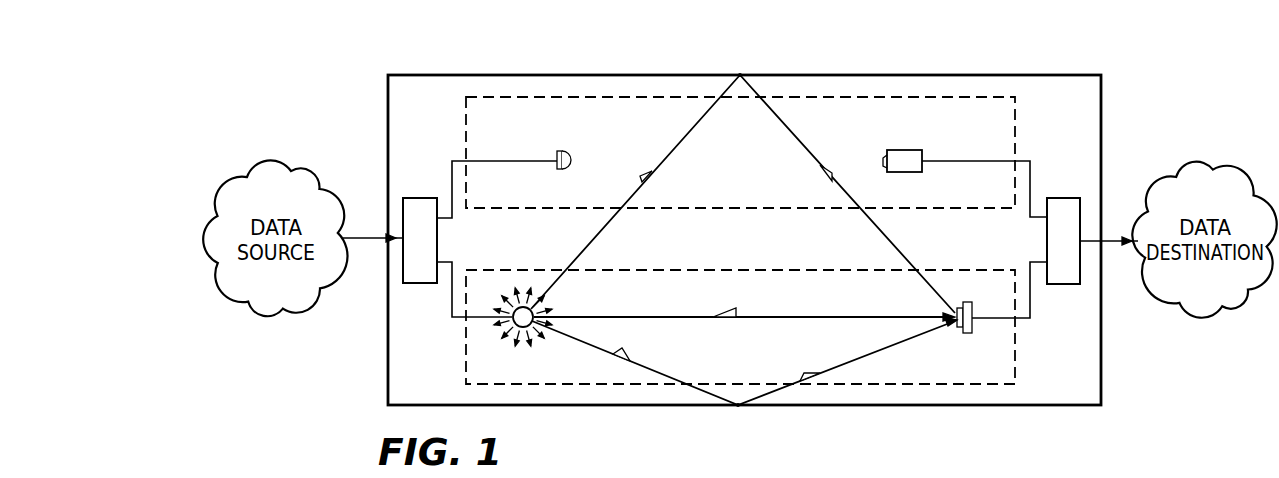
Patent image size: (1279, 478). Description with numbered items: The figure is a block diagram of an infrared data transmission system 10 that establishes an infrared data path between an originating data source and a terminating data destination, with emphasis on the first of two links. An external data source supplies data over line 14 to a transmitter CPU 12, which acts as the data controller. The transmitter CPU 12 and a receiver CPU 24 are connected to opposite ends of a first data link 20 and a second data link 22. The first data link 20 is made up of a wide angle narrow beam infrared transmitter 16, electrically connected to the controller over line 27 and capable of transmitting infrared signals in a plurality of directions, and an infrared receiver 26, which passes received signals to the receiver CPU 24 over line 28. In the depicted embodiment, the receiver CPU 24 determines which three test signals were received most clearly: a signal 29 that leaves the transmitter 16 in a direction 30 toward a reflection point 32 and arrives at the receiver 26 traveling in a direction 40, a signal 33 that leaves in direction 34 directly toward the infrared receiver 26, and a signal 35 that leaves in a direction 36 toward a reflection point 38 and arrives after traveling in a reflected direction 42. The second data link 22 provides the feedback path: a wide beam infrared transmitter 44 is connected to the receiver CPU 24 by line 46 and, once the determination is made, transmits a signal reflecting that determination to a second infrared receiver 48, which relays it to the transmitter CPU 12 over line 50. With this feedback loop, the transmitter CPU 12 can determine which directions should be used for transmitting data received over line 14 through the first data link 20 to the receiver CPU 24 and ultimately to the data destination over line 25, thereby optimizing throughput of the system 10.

The data transmission system 10 is at (404, 66).
The transmitter CPU 12 is at (428, 284).
The line 14 is at (364, 240).
The wide angle narrow beam infrared transmitter 16 is at (545, 312).
The first data link 20 is at (1018, 380).
The second data link 22 is at (1016, 108).
The receiver CPU 24 is at (1055, 285).
The line 25 is at (1110, 243).
The infrared receiver 26 is at (963, 334).
The line 27 is at (455, 318).
The line 28 is at (1025, 320).
The signal 29 is at (691, 128).
The direction 30 is at (651, 163).
The reflection point 32 is at (742, 73).
The signal 33 is at (800, 317).
The direction 34 is at (727, 309).
The signal 35 is at (666, 373).
The direction 36 is at (628, 352).
The reflection point 38 is at (740, 408).
The direction 40 is at (831, 167).
The reflected direction 42 is at (811, 373).
The wide beam infrared transmitter 44 is at (905, 150).
The line 46 is at (1029, 160).
The second infrared receiver 48 is at (558, 149).
The line 50 is at (452, 161).